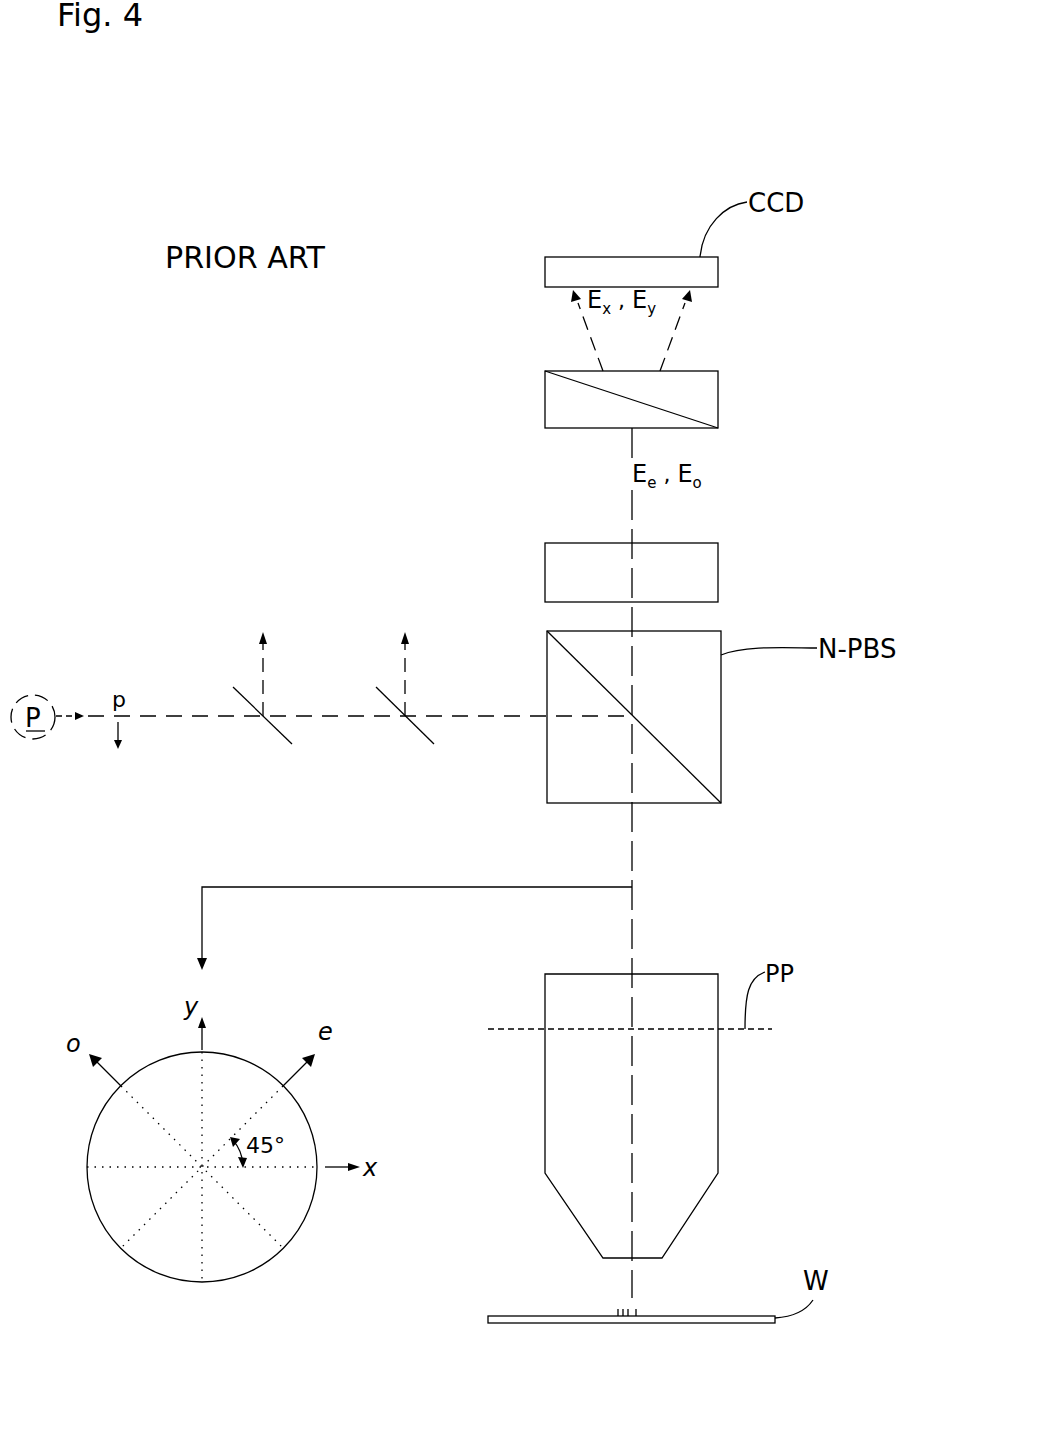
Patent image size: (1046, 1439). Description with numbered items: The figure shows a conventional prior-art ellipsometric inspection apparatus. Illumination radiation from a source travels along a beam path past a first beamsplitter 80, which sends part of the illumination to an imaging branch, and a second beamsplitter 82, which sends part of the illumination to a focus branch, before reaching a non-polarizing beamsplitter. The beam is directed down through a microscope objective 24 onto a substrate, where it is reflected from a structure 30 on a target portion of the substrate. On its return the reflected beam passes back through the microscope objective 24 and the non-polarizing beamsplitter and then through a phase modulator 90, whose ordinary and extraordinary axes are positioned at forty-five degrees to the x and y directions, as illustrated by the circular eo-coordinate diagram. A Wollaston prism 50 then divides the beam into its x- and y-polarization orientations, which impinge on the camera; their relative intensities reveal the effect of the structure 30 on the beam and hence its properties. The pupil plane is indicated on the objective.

The Wollaston prism 50 is at (690, 383).
The phase modulator 90 is at (605, 583).
The first beamsplitter 80 is at (262, 673).
The second beamsplitter 82 is at (405, 673).
The microscope objective 24 is at (718, 1105).
The structure 30 is at (632, 1323).